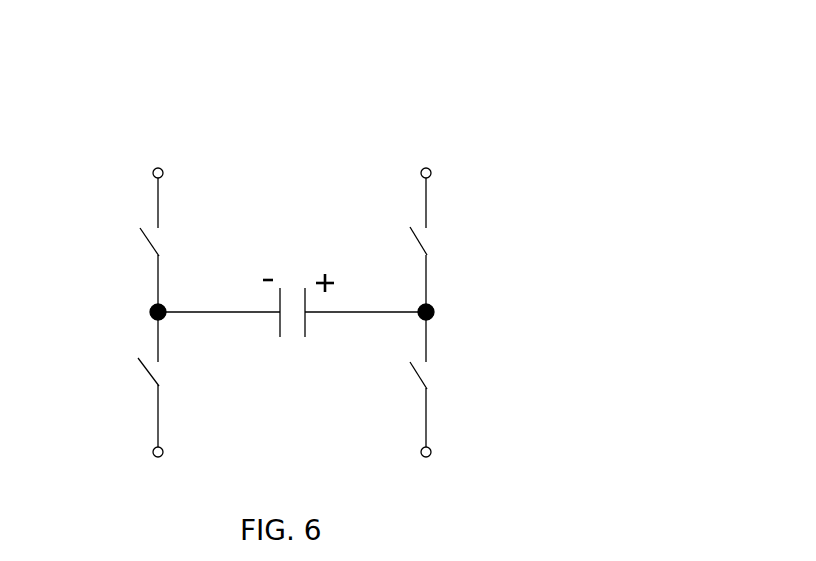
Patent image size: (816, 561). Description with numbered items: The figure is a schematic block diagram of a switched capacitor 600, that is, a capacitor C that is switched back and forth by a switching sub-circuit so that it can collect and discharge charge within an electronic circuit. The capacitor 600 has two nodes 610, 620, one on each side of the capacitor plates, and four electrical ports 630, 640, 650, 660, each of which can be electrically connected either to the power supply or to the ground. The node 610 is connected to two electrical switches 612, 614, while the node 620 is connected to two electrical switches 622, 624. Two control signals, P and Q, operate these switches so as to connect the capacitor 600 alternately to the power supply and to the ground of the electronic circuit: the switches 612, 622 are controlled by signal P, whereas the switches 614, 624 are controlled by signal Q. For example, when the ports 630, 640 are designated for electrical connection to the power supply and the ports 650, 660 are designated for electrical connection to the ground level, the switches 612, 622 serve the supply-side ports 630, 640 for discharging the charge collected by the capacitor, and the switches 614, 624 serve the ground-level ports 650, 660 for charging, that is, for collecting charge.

The switched capacitor 600 is at (498, 72).
The node 610 is at (152, 306).
The node 620 is at (433, 305).
The electrical switch 612 is at (153, 241).
The electrical switch 614 is at (148, 378).
The electrical switch 622 is at (413, 242).
The electrical switch 624 is at (418, 378).
The electrical port 630 is at (158, 168).
The electrical port 640 is at (427, 168).
The electrical port 650 is at (154, 456).
The electrical port 660 is at (428, 457).